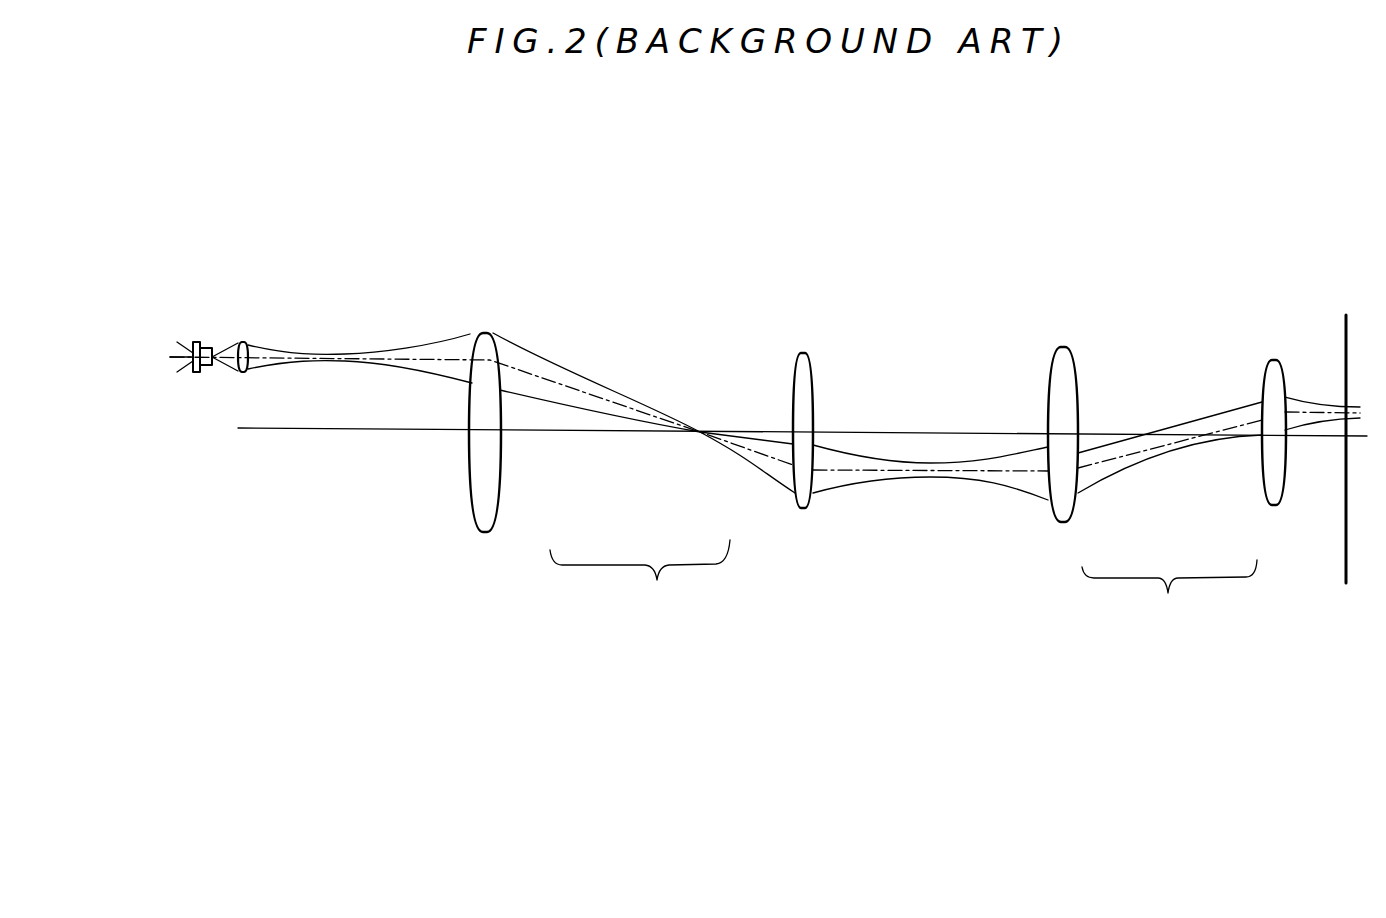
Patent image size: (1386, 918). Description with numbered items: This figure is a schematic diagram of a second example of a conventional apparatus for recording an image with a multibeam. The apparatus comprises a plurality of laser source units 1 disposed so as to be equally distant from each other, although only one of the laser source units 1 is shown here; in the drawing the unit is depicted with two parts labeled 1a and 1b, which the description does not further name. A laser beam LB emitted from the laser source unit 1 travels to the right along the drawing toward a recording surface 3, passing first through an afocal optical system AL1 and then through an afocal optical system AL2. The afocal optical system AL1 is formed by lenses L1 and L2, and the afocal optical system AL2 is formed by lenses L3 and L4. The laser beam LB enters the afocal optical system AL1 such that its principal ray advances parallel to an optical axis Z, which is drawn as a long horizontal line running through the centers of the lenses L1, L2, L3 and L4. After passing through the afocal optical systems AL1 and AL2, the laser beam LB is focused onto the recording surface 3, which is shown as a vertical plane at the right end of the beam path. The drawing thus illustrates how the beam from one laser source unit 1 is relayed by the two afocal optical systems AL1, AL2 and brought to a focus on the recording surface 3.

The laser source unit 1 is at (222, 283).
The semiconductor laser 1a is at (197, 342).
The collimator lens 1b is at (256, 308).
The laser beam LB is at (372, 350).
The optical axis Z is at (320, 428).
The lens L1 is at (488, 527).
The lens L2 is at (798, 497).
The lens L3 is at (1060, 507).
The lens L4 is at (1265, 495).
The afocal optical system AL1 is at (640, 588).
The afocal optical system AL2 is at (1169, 597).
The recording surface 3 is at (1343, 520).